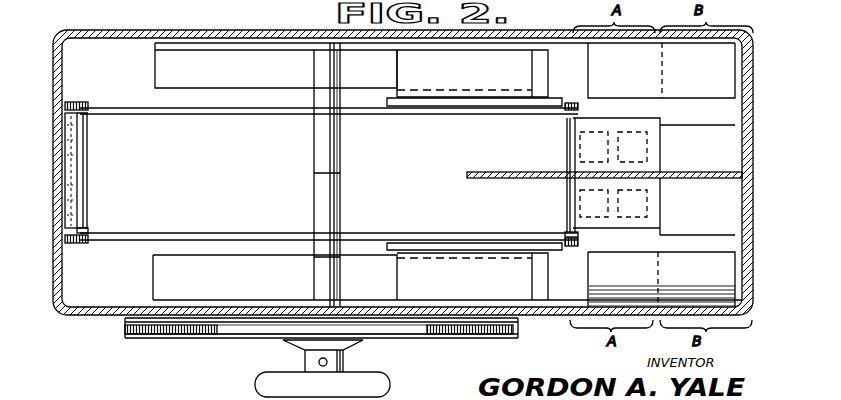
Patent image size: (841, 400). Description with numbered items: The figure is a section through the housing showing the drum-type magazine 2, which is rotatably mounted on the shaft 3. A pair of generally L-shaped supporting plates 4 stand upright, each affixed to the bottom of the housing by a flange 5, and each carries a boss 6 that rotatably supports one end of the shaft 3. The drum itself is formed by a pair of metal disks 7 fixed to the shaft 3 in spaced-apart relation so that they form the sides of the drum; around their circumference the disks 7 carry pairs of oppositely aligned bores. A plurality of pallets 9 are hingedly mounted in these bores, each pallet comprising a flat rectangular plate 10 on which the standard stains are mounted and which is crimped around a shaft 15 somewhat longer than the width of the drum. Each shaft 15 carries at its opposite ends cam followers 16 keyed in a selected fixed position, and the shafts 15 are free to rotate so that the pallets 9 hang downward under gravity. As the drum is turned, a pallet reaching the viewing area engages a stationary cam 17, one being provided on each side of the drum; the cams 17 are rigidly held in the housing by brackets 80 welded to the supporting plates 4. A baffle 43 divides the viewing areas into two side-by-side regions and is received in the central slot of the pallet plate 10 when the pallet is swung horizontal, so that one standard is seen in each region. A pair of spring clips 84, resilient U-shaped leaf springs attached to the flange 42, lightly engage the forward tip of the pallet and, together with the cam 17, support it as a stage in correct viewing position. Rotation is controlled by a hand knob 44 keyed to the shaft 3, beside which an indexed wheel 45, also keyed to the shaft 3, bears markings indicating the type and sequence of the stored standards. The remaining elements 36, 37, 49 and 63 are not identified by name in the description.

The drum-type magazine 2 is at (145, 251).
The shaft 3 is at (330, 188).
The supporting plate 4 is at (185, 45).
The flange 5 is at (238, 84).
The boss 6 is at (318, 73).
The metal disk 7 is at (178, 114).
The pallet 9 is at (97, 164).
The plate 10 is at (650, 163).
The shaft 15 is at (88, 230).
The cam follower 16 is at (80, 101).
The stationary cam 17 is at (452, 103).
The bottom wall 36 is at (742, 248).
The top wall 37 is at (727, 33).
The flange 42 is at (728, 118).
The baffle 43 is at (517, 172).
The hand knob 44 is at (262, 382).
The indexed wheel 45 is at (143, 342).
The floor plate 49 is at (163, 300).
The post lower end 63 is at (337, 285).
The bracket 80 is at (410, 80).
The spring clip 84 is at (663, 119).